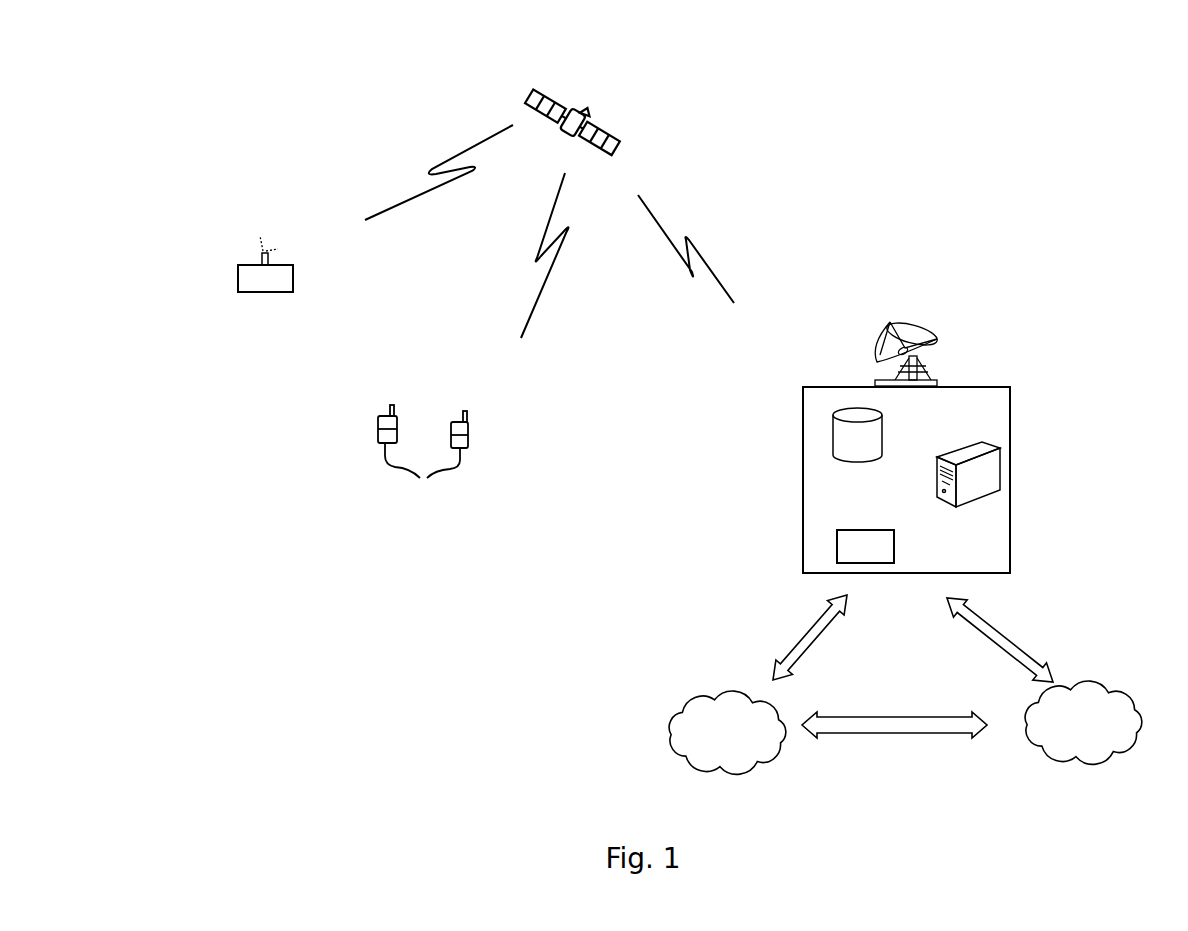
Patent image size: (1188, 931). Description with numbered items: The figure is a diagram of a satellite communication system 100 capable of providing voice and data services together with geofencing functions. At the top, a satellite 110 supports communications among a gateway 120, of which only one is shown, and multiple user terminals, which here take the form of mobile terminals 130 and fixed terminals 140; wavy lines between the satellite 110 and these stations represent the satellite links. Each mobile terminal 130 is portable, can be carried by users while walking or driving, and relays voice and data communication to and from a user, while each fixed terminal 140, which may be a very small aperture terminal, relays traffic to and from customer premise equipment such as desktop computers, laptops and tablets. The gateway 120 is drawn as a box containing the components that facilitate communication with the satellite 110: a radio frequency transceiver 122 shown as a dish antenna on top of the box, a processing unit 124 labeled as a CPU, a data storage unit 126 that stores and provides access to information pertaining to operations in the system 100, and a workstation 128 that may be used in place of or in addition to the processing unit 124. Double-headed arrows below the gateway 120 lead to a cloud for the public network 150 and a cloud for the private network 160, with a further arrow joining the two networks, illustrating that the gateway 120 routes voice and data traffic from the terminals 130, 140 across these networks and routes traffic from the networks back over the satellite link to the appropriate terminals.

The satellite communication system 100 is at (948, 65).
The satellite 110 is at (608, 132).
The gateway 120 is at (808, 387).
The radio frequency (RF) transceiver 122 is at (937, 330).
The processing unit 124 is at (837, 550).
The data storage unit 126 is at (863, 460).
The workstation 128 is at (1000, 462).
The mobile terminal 130 is at (423, 455).
The fixed terminal 140 is at (238, 291).
The public network 150 is at (1083, 733).
The private network 160 is at (727, 743).